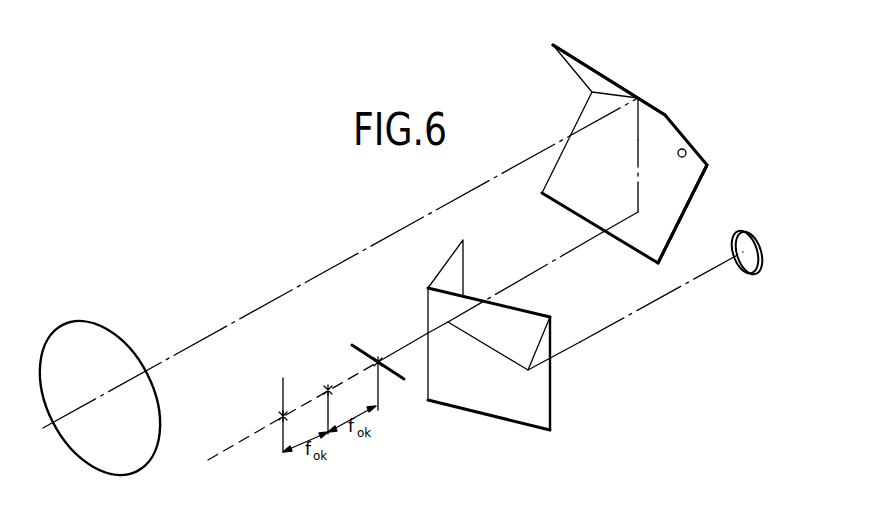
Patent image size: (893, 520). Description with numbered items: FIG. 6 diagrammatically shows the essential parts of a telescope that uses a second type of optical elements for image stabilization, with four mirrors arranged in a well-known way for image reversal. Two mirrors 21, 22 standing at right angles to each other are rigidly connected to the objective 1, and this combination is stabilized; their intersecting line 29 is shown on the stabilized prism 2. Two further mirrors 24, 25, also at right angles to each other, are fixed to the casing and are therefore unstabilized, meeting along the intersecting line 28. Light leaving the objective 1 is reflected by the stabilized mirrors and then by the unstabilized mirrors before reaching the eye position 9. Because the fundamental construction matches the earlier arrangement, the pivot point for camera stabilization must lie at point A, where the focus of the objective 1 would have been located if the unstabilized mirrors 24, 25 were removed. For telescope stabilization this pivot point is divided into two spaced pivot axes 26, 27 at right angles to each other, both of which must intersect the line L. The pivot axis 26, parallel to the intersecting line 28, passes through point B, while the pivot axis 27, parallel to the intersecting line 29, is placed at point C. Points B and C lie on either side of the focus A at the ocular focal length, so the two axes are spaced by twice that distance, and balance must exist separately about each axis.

The objective 1 is at (128, 303).
The roof prism 2 is at (606, 70).
The mirror 21 is at (652, 103).
The mirror 22 is at (698, 188).
The intersecting line of the stabilized mirrors 29 is at (686, 150).
The mirror 24 is at (437, 273).
The mirror 25 is at (550, 405).
The intersecting line of the unstabilized mirrors 28 is at (428, 393).
The pivot axis 26 is at (283, 378).
The pivot axis 27 is at (355, 342).
The eye / exit pupil disc 9 is at (747, 275).
The focus of the objective A is at (329, 386).
The point B is at (272, 407).
The point C is at (378, 367).
The line L is at (425, 333).